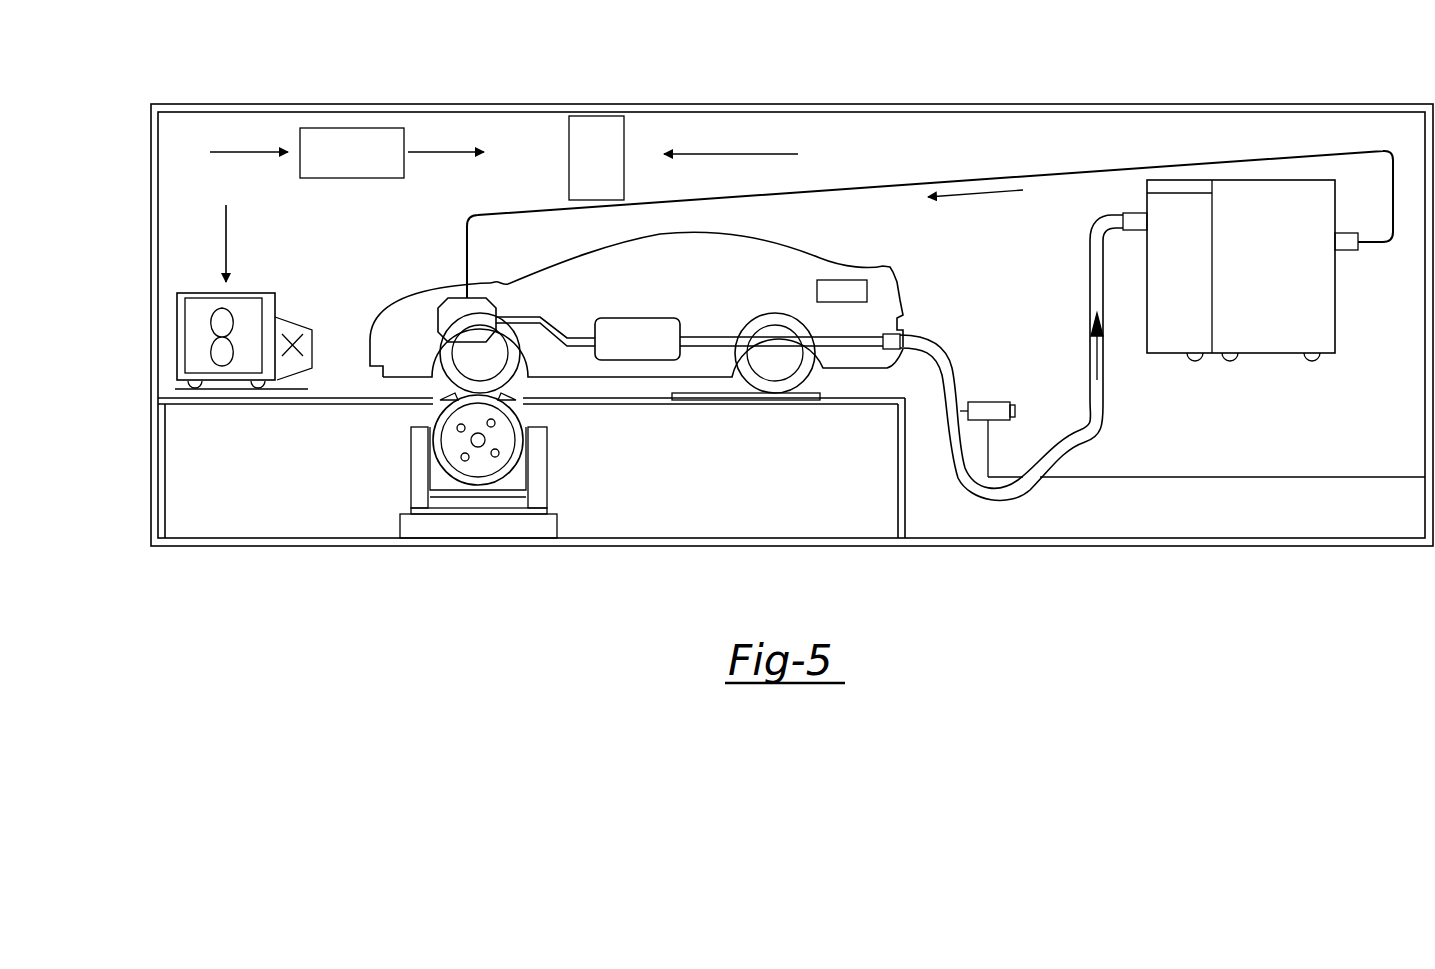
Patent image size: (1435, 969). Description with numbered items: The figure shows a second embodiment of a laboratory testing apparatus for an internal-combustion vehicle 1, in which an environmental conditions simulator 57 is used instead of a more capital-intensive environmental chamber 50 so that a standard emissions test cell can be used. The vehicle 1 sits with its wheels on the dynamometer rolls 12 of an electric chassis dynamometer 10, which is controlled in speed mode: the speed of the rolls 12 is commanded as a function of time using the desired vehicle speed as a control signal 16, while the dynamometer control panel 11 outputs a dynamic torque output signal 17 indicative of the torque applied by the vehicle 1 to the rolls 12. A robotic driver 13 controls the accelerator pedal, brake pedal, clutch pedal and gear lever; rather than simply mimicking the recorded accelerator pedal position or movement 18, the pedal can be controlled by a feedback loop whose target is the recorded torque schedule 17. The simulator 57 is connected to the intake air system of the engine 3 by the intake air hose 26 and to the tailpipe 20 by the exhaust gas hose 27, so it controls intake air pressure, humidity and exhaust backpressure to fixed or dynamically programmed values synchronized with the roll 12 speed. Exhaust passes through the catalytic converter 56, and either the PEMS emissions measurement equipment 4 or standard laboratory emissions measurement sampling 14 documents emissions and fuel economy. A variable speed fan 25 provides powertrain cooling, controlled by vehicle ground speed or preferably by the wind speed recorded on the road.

The vehicle 1 is at (770, 240).
The engine 3 is at (453, 315).
The PEMS emissions measurement equipment 4 is at (867, 292).
The electric chassis dynamometer 10 is at (525, 495).
The dynamometer control panel 11 is at (349, 128).
The dynamometer rolls 12 is at (438, 412).
The robotic driver 13 is at (597, 116).
The standard laboratory emissions measurement sampling 14 is at (1228, 476).
The control signal 16 is at (222, 153).
The dynamic torque output signal 17 is at (474, 150).
The accelerator pedal position or movement 18 is at (785, 152).
The tailpipe 20 is at (895, 338).
The variable speed fan 25 is at (195, 345).
The intake air hose 26 is at (1068, 173).
The exhaust gas hose 27 is at (1100, 418).
The environmental chamber 50 is at (1374, 104).
The catalytic converter 56 is at (640, 318).
The environmental conditions simulator 57 is at (1335, 320).